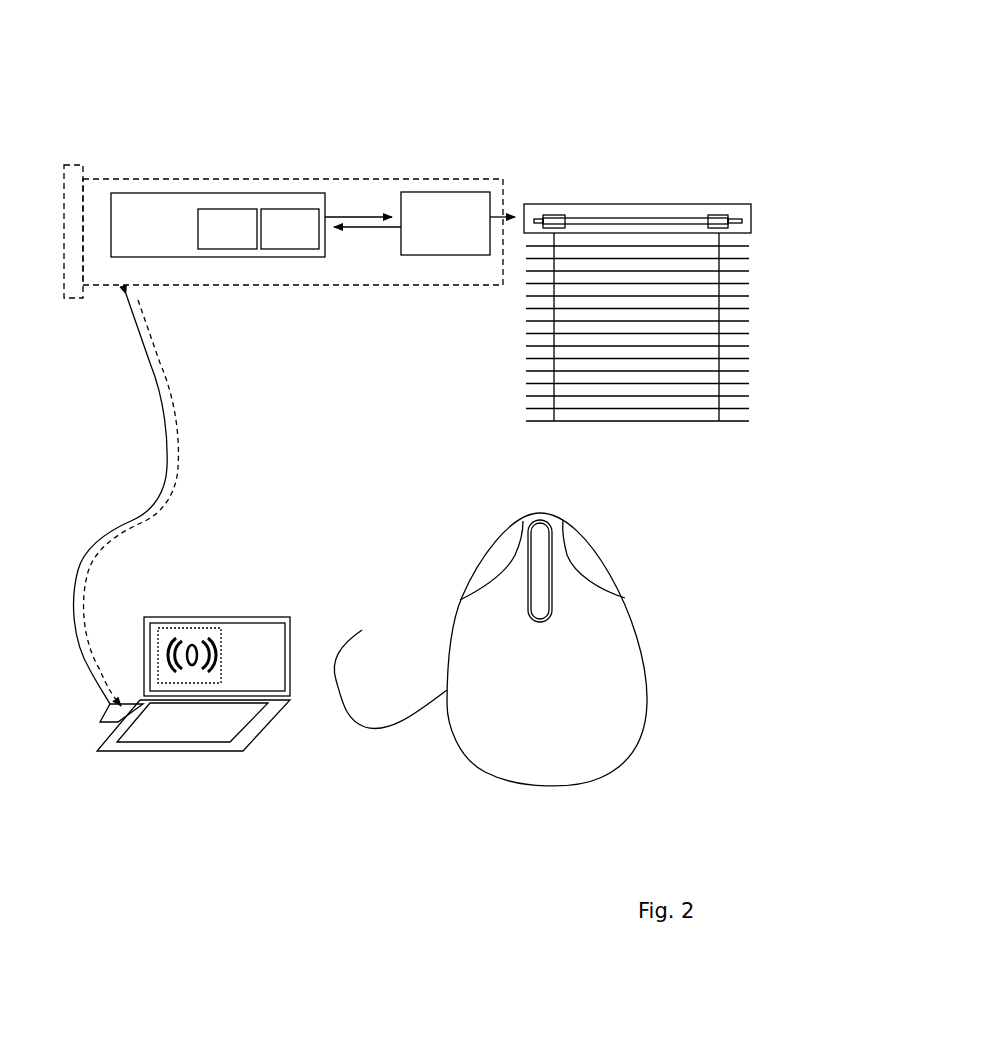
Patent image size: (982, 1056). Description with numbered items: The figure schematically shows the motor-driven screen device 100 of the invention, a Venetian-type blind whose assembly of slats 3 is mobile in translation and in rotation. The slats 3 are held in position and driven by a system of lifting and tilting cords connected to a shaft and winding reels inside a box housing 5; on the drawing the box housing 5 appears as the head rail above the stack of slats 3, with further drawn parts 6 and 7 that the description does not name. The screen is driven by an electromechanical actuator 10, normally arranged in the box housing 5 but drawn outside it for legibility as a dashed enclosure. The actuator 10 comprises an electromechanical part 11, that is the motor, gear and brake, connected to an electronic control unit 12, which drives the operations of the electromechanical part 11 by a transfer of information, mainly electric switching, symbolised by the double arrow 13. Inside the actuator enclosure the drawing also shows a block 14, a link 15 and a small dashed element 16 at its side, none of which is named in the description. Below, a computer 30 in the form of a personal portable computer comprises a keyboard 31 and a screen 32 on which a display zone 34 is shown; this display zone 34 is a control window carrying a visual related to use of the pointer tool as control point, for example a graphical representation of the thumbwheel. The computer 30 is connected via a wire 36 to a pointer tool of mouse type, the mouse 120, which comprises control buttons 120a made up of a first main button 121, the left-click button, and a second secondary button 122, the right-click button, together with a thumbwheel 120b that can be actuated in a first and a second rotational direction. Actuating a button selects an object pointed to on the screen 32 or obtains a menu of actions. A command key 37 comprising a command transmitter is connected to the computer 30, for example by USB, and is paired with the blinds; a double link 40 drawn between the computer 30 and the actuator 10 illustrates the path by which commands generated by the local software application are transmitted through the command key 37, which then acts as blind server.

The motor-driven screen device 100 is at (236, 81).
The power supply 16 is at (72, 167).
The electromechanical actuator 10 is at (183, 183).
The electromechanical part 11 is at (445, 223).
The electronic control unit 12 is at (290, 229).
The double arrow 13 is at (218, 225).
The software module 14 is at (227, 229).
The communication link 15 is at (360, 217).
The box housing 5 is at (581, 213).
The actuator 6 is at (712, 213).
The cord 7 is at (723, 262).
The slats 3 is at (527, 397).
The wireless connection 40 is at (126, 500).
The computer 30 is at (215, 695).
The keyboard 31 is at (197, 728).
The screen 32 is at (272, 648).
The display zone 34 is at (177, 632).
The wire 36 is at (390, 667).
The command key 37 is at (103, 715).
The computer mouse 120 is at (527, 634).
The control buttons 120a is at (468, 541).
The first main button 121 is at (495, 558).
The second secondary button 122 is at (580, 542).
The thumbwheel 120b is at (545, 592).